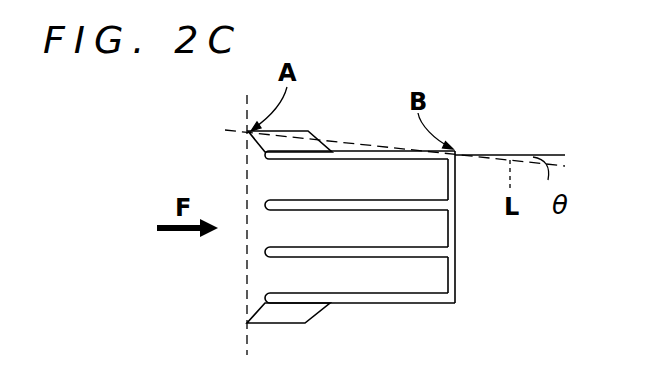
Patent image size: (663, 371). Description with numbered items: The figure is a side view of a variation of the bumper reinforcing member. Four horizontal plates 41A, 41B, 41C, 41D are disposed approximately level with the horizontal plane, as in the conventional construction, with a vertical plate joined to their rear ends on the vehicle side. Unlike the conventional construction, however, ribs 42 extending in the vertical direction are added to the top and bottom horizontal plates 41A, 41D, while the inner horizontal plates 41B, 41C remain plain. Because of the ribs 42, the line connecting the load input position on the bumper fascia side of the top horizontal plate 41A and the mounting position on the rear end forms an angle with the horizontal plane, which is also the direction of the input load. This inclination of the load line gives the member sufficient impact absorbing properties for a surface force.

The horizontal plate 41A is at (340, 150).
The horizontal plate 41B is at (334, 203).
The horizontal plate 41C is at (334, 250).
The horizontal plate 41D is at (334, 297).
The rib 42 is at (256, 149).